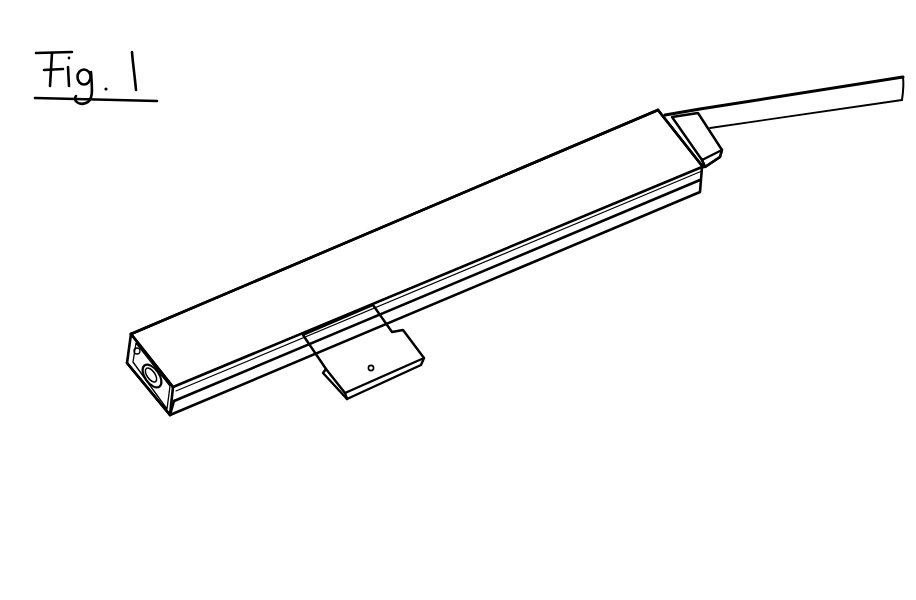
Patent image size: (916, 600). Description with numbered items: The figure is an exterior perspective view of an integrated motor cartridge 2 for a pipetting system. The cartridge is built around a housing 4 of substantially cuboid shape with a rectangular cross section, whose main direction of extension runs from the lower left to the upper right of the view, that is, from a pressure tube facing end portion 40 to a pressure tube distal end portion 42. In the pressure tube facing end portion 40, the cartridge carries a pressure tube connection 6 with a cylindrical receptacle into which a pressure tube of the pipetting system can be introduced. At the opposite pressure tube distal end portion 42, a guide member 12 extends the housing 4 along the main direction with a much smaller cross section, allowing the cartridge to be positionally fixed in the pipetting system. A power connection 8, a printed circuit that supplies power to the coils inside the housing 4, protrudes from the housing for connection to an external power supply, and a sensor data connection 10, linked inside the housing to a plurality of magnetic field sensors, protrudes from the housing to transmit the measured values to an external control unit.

The integrated motor cartridge 2 is at (355, 172).
The housing 4 is at (517, 168).
The pressure tube connection 6 is at (141, 396).
The pressure tube facing end portion 40 is at (189, 418).
The sensor data connection 10 is at (335, 392).
The pressure tube distal end portion 42 is at (642, 108).
The guide member 12 is at (718, 162).
The power connection 8 is at (817, 88).